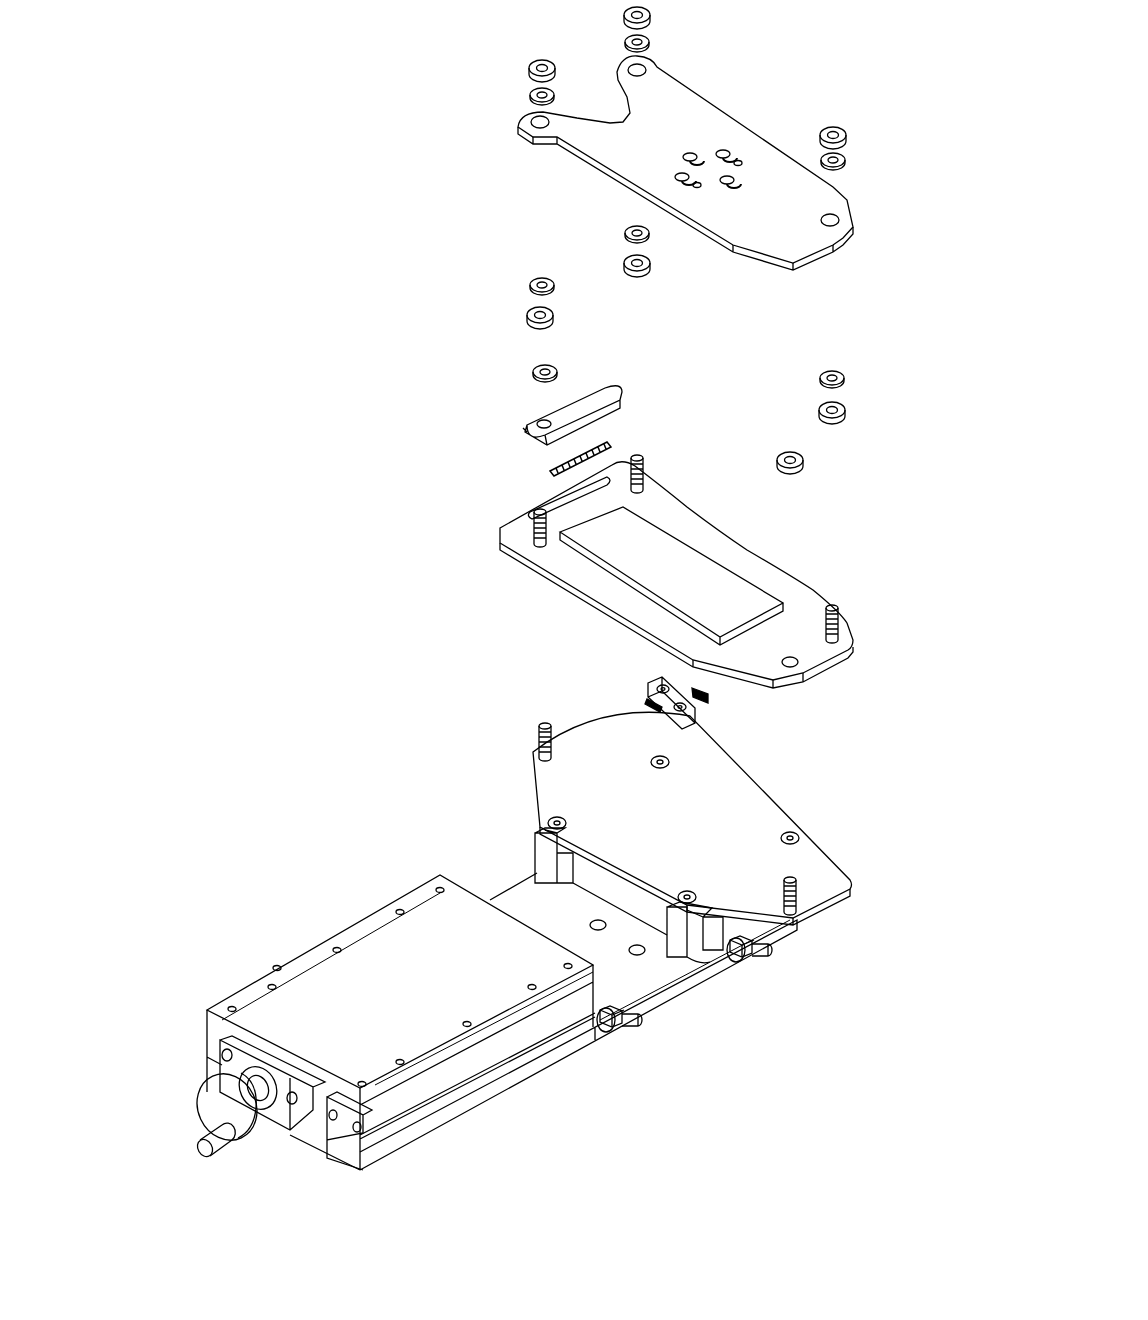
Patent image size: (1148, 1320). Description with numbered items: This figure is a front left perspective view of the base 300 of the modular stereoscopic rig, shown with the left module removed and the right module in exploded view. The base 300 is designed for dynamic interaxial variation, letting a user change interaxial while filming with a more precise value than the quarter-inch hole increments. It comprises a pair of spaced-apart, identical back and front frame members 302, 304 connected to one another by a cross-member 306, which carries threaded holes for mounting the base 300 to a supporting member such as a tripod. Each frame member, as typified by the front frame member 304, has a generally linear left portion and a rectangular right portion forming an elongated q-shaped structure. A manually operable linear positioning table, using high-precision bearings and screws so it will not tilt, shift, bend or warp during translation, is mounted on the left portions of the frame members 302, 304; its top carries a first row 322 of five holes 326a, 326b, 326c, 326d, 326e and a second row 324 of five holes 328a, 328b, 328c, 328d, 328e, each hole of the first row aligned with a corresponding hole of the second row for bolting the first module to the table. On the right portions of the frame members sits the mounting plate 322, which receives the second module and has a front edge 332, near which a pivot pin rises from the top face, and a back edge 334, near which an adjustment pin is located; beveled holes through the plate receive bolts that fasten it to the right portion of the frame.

The base 300 is at (335, 797).
The back frame member 302 is at (508, 897).
The front frame member 304 is at (543, 962).
The cross-member 306 is at (565, 933).
The mounting plate 322 is at (585, 752).
The second row of holes 324 is at (235, 1062).
The hole 326a is at (229, 1007).
The hole 326b is at (271, 985).
The hole 326c is at (336, 948).
The hole 326d is at (398, 910).
The hole 326e is at (440, 887).
The hole 328a is at (358, 1082).
The hole 328b is at (399, 1060).
The hole 328c is at (465, 1022).
The hole 328d is at (530, 985).
The hole 328e is at (566, 963).
The front edge 332 is at (825, 905).
The back edge 334 is at (612, 705).